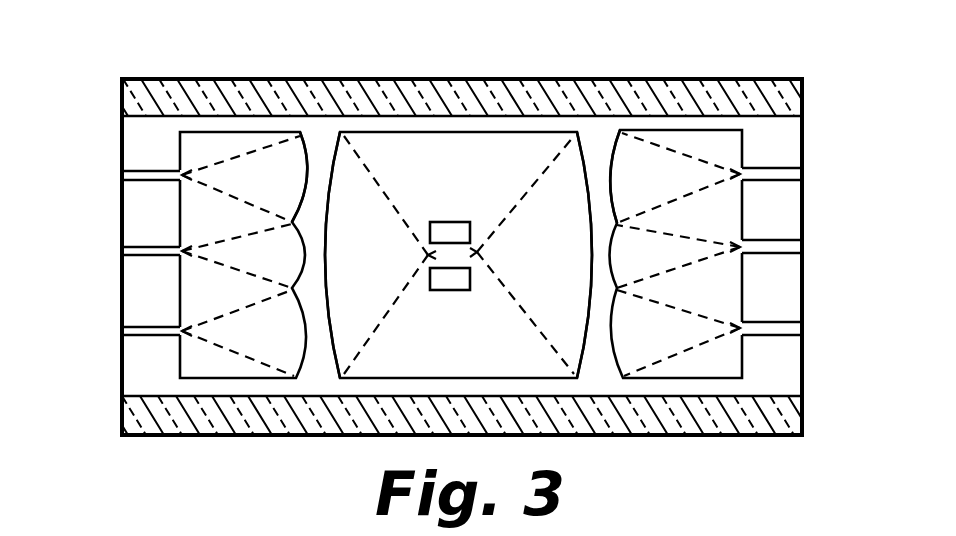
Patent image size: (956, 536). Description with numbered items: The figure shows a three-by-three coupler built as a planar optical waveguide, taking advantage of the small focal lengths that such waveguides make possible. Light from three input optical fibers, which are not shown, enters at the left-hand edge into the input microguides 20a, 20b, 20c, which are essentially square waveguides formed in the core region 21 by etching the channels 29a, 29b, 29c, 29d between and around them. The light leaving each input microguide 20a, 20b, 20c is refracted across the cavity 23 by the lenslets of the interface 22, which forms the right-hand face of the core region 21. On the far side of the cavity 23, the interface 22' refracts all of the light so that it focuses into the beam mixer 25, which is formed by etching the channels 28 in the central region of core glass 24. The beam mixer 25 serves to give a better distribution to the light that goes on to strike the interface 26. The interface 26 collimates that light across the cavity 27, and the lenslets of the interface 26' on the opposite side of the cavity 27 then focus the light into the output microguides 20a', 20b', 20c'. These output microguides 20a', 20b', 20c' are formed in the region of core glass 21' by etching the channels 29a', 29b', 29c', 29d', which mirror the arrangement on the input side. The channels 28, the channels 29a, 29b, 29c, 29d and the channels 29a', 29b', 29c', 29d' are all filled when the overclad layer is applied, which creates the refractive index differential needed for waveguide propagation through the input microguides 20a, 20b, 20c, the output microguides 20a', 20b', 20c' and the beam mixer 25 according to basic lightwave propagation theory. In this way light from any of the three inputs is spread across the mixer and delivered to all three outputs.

The input microguide 20a is at (110, 175).
The input microguide 20b is at (110, 251).
The input microguide 20c is at (110, 331).
The output microguide 20a' is at (815, 172).
The output microguide 20b' is at (816, 243).
The output microguide 20c' is at (814, 323).
The core region 21 is at (243, 255).
The region of core glass 21' is at (676, 254).
The interface 22 is at (285, 120).
The interface 22' is at (344, 198).
The cavity 23 is at (316, 137).
The region of core glass 24 is at (380, 147).
The beam mixer 25 is at (457, 258).
The interface 26 is at (567, 198).
The interface 26' is at (621, 121).
The cavity 27 is at (600, 135).
The channels 28 is at (449, 232).
The channel 29a is at (90, 144).
The channel 29b is at (90, 213).
The channel 29c is at (90, 291).
The channel 29d is at (90, 365).
The channel 29a' is at (838, 141).
The channel 29b' is at (839, 210).
The channel 29c' is at (837, 287).
The channel 29d' is at (839, 365).